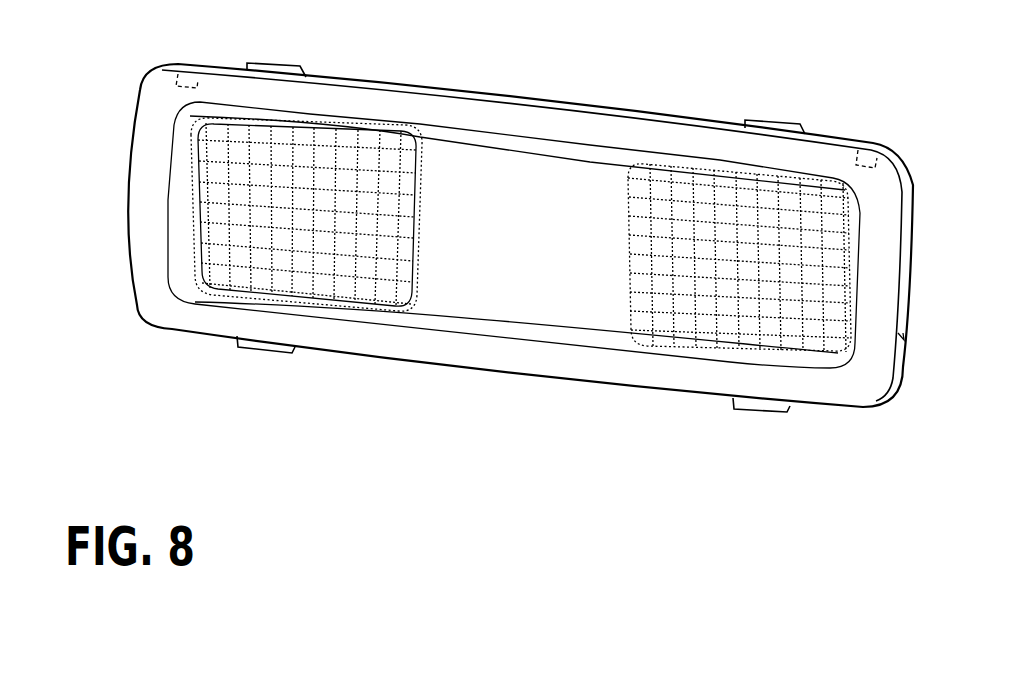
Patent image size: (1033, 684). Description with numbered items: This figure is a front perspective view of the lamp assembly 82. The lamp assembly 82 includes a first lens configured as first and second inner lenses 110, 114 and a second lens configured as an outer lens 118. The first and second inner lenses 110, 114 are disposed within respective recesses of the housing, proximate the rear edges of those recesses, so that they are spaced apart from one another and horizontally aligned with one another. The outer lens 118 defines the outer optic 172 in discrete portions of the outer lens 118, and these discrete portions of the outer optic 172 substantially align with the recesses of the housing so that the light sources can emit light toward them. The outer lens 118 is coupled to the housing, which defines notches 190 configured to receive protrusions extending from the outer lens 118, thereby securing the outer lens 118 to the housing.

The lamp assembly 82 is at (640, 75).
The outer lens 118 is at (438, 113).
The notches 190 is at (153, 68).
The outer optic 172 is at (190, 303).
The first inner lens 110 is at (384, 310).
The second inner lens 114 is at (690, 350).